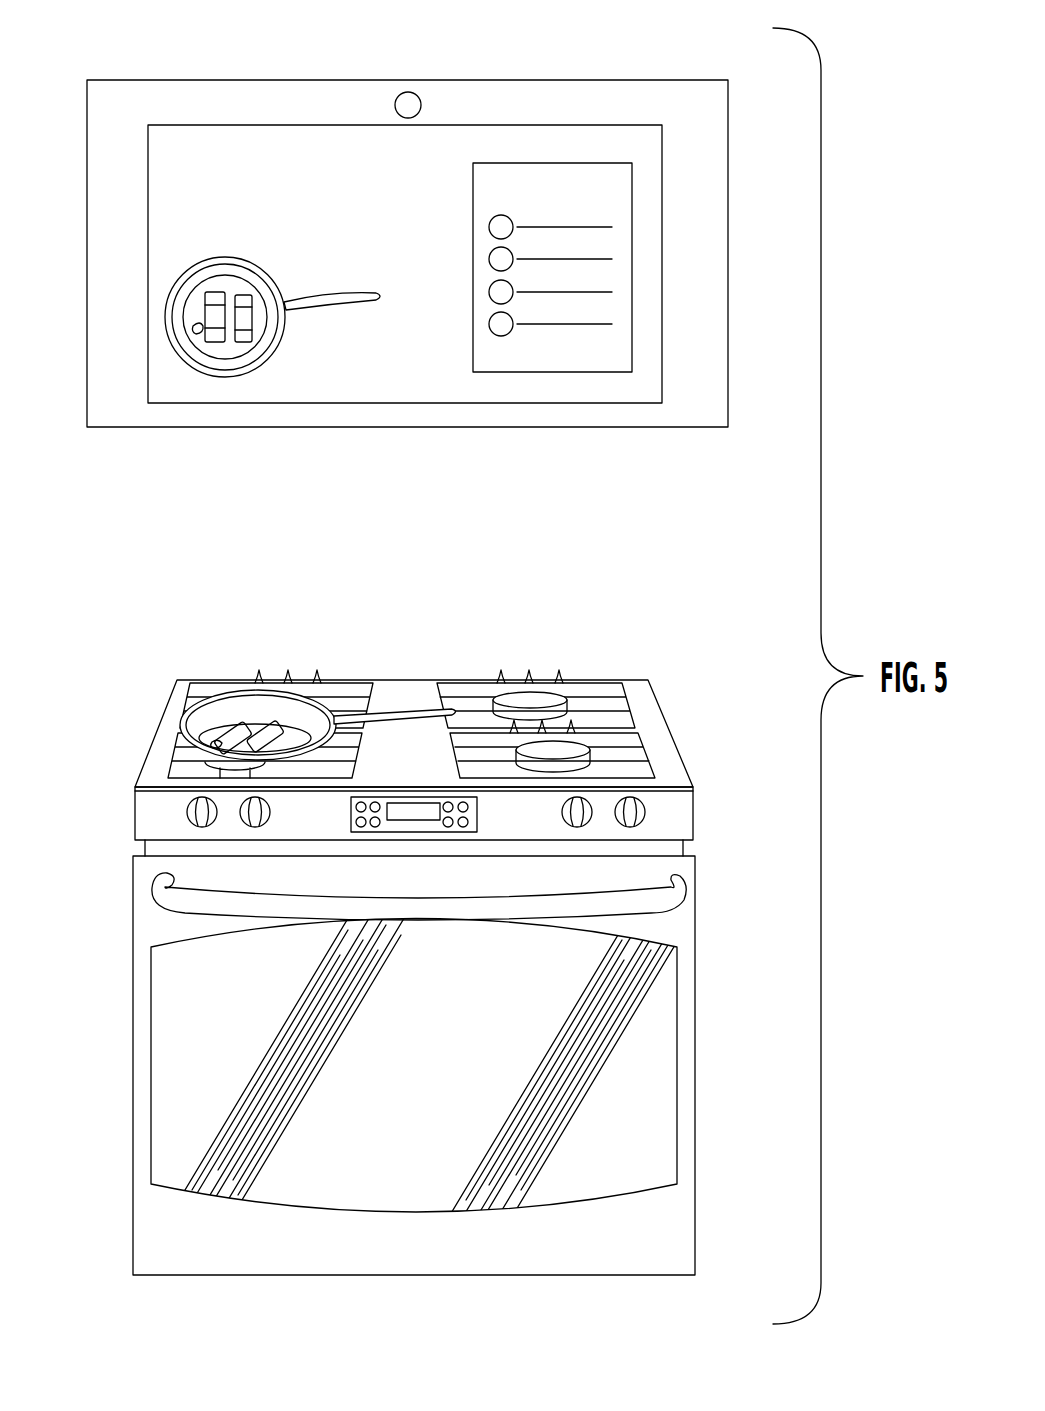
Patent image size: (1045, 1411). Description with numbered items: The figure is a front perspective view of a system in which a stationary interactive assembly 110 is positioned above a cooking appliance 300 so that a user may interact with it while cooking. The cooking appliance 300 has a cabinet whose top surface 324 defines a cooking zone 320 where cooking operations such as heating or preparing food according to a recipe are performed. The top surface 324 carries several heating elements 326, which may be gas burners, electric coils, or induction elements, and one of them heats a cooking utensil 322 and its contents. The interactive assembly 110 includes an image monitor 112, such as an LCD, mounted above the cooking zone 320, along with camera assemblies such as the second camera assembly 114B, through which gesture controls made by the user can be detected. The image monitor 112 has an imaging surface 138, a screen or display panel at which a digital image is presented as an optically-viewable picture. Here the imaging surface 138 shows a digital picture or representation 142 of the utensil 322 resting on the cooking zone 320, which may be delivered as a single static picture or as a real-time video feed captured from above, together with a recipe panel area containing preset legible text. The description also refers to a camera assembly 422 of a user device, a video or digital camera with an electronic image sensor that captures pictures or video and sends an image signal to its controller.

The interactive assembly 110 is at (728, 235).
The image monitor 112 is at (698, 125).
The second camera assembly 114B is at (422, 105).
The imaging surface 138 is at (232, 150).
The digital picture or representation 142 is at (178, 357).
The camera assembly 422 is at (473, 233).
The cooking appliance 300 is at (124, 1089).
The cooking zone 320 is at (446, 657).
The cooking utensil 322 is at (233, 705).
The top surface 324 is at (664, 716).
The heating elements 326 is at (545, 708).